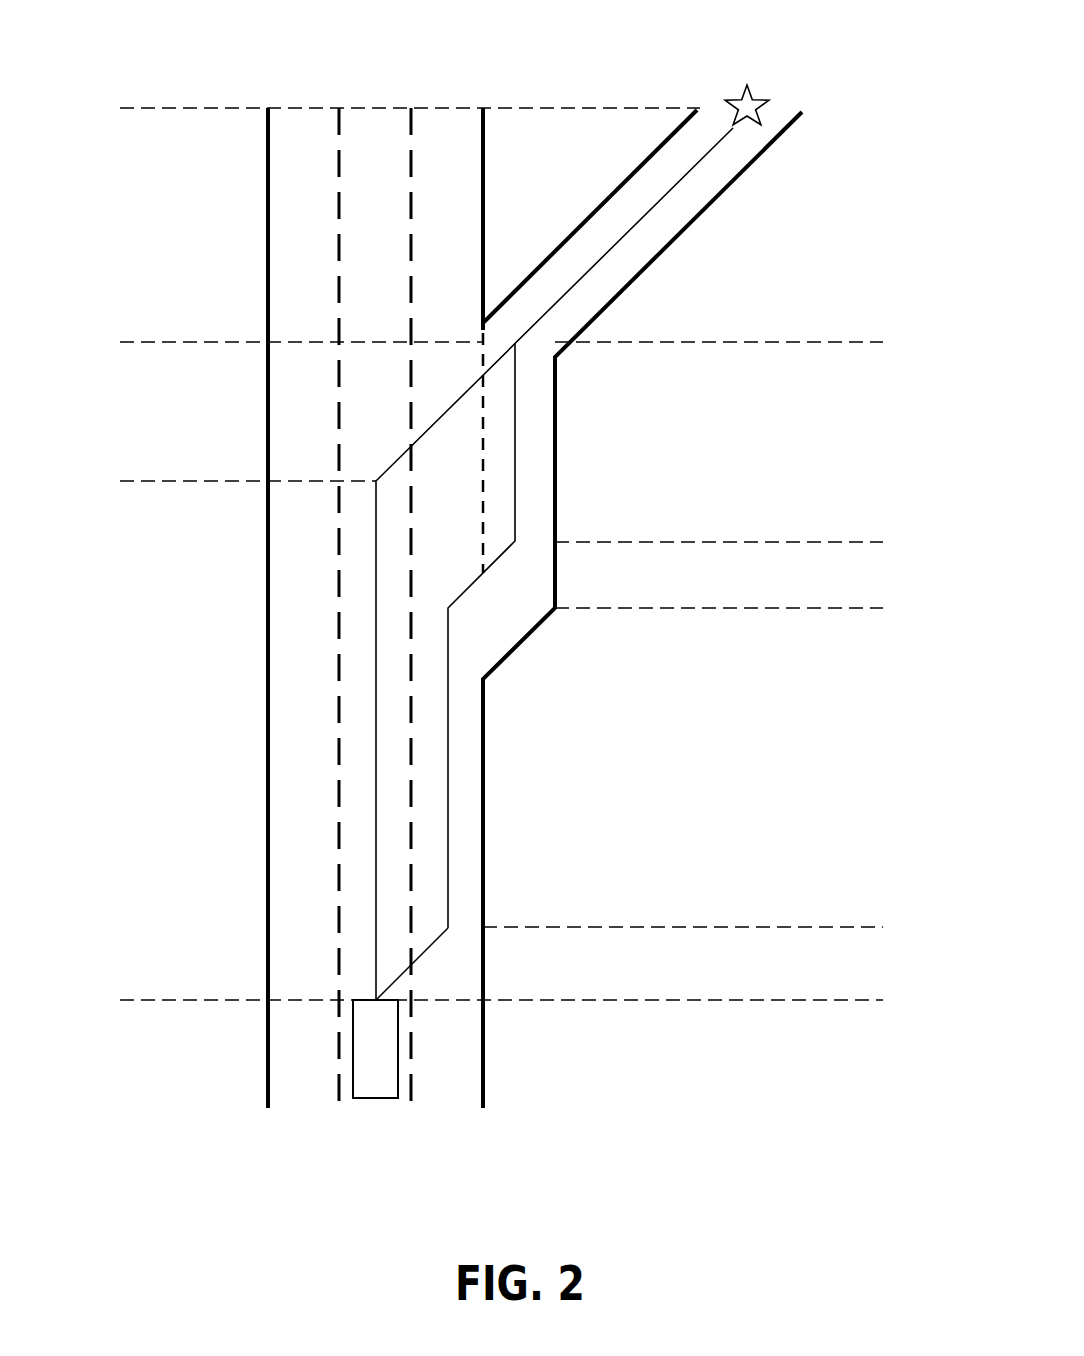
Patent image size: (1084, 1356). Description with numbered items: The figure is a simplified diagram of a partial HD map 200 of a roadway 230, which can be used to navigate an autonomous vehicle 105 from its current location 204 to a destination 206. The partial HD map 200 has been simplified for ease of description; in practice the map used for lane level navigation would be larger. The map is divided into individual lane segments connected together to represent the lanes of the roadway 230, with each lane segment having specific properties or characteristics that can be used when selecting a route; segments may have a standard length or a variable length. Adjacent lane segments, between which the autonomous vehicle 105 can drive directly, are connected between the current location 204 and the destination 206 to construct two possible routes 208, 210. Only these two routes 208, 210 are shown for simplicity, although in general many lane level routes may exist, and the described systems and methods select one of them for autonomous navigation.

The partial HD map 200 is at (193, 48).
The roadway 230 is at (483, 83).
The destination 206 is at (766, 97).
The possible route 208 is at (376, 805).
The possible route 210 is at (448, 785).
The autonomous vehicle 105 is at (367, 1099).
The current location 204 is at (385, 1108).